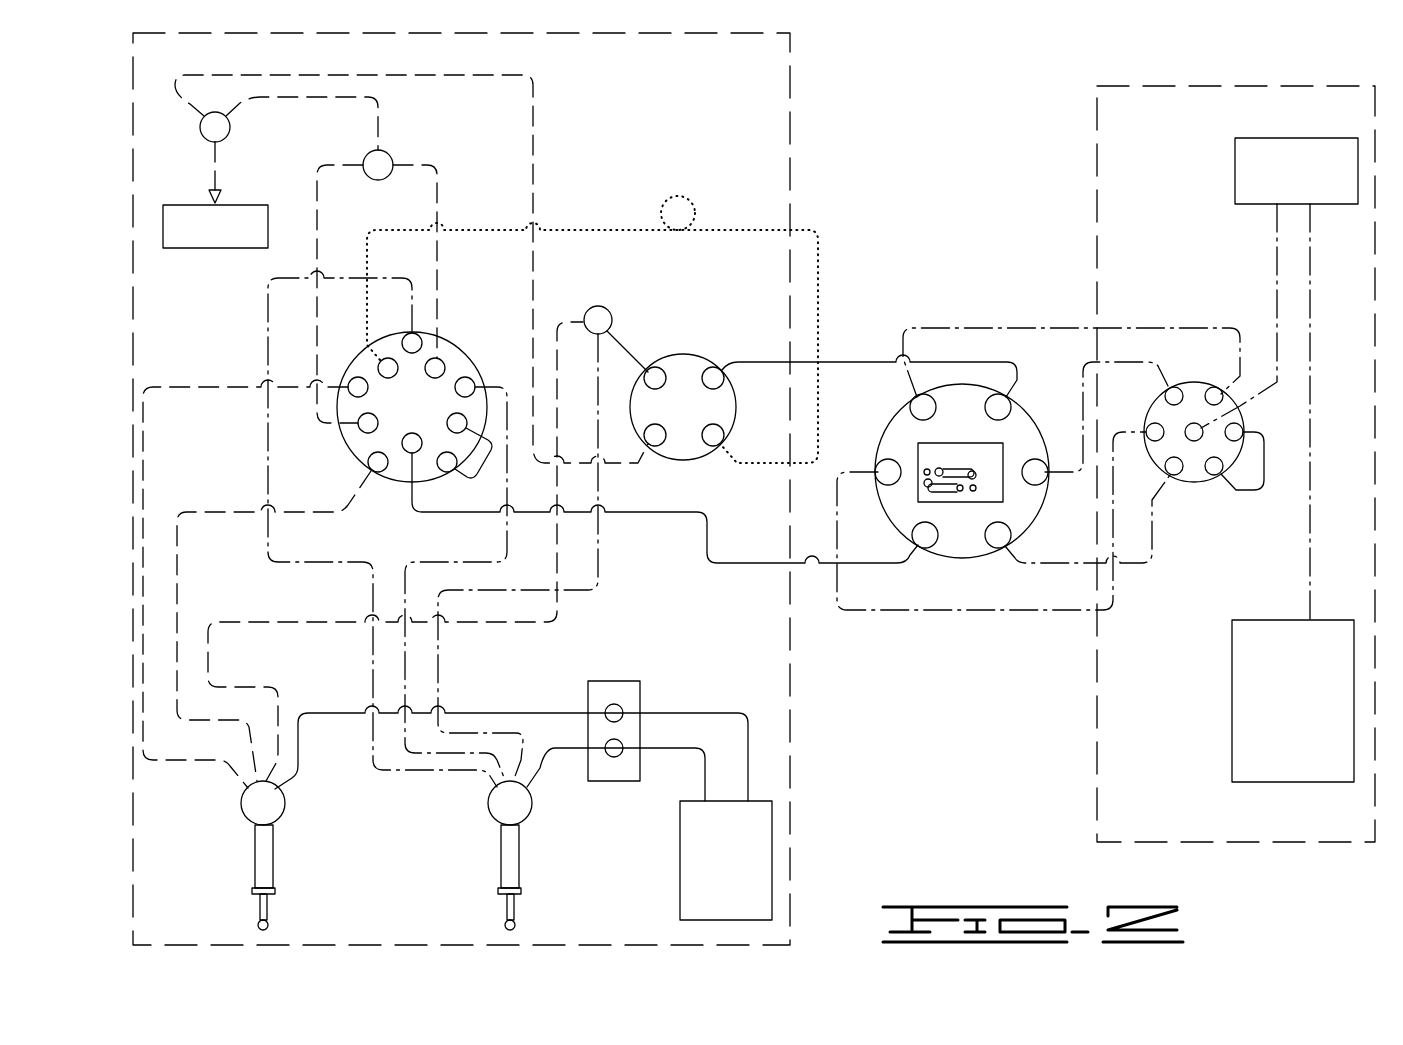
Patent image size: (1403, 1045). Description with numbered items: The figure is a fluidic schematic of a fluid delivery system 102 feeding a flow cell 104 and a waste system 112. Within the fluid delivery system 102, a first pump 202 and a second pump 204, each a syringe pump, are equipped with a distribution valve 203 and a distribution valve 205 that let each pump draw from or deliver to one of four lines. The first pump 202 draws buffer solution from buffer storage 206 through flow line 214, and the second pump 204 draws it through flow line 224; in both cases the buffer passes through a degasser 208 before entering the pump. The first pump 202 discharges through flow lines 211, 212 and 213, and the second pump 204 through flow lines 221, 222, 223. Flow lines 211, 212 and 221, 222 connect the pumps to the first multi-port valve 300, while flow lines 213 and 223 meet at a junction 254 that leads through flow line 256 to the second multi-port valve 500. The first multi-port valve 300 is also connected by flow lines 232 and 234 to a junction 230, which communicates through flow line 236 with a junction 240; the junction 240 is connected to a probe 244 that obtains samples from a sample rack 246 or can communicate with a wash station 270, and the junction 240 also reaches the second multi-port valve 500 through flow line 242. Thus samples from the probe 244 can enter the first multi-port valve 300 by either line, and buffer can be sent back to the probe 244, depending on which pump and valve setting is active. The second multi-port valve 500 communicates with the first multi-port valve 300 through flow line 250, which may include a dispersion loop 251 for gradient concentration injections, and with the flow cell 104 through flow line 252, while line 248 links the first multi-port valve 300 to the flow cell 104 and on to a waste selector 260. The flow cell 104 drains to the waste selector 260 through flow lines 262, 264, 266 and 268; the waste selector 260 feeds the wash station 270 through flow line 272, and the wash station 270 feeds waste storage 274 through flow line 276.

The fluid delivery system 102 is at (792, 82).
The waste system 112 is at (1270, 85).
The flow cell 104 is at (958, 556).
The first pump 202 is at (253, 870).
The distribution valve 203 is at (241, 810).
The second pump 204 is at (500, 870).
The distribution valve 205 is at (490, 812).
The buffer storage 206 is at (680, 892).
The degasser 208 is at (615, 680).
The flow line 211 is at (197, 386).
The flow line 212 is at (213, 511).
The flow line 213 is at (270, 620).
The flow line 214 is at (300, 780).
The flow line 221 is at (371, 660).
The flow line 222 is at (437, 560).
The flow line 223 is at (440, 675).
The flow line 224 is at (565, 752).
The junction 230 is at (392, 155).
The flow line 232 is at (320, 205).
The flow line 234 is at (440, 205).
The flow line 236 is at (313, 99).
The junction 240 is at (201, 136).
The flow line 242 is at (536, 140).
The probe 244 is at (218, 168).
The sample rack 246 is at (205, 250).
The line 248 is at (656, 515).
The flow line 250 is at (820, 250).
The dispersion loop 251 is at (690, 197).
The flow line 252 is at (857, 360).
The junction 254 is at (603, 306).
The flow line 256 is at (630, 345).
The waste selector 260 is at (1195, 483).
The flow line 262 is at (1140, 565).
The flow line 264 is at (963, 612).
The flow line 266 is at (1127, 360).
The flow line 268 is at (1045, 327).
The wash station 270 is at (1235, 172).
The flow line 272 is at (1275, 258).
The waste storage 274 is at (1232, 706).
The flow line 276 is at (1300, 558).
The first multi-port valve 300 is at (463, 348).
The second multi-port valve 500 is at (688, 462).